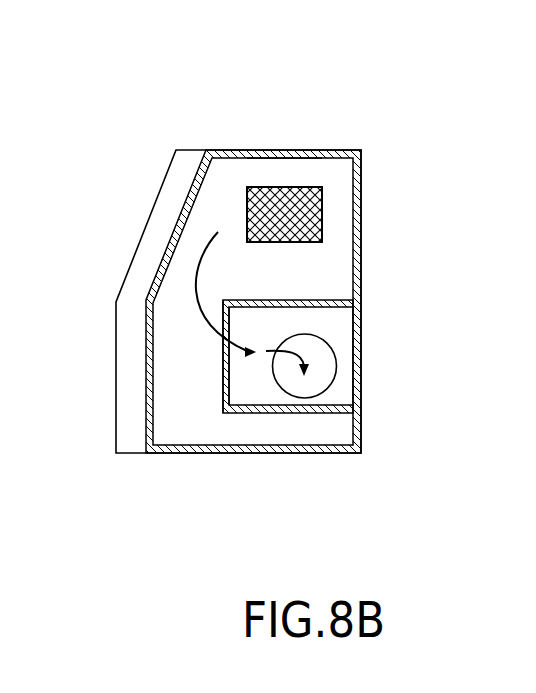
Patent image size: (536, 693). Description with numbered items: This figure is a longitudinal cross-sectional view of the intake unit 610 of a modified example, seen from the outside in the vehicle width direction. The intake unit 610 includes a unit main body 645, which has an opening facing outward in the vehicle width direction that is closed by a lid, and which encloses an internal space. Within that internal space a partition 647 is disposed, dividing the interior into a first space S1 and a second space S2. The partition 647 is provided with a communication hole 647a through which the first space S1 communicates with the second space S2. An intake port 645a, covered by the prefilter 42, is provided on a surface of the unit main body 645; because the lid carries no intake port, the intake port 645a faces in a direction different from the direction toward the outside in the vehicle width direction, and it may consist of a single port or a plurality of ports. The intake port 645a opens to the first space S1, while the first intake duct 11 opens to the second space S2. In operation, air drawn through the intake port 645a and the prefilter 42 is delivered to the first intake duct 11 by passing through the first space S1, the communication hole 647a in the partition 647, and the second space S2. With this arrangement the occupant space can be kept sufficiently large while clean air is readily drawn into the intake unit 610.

The intake unit 610 is at (119, 135).
The unit main body 645 is at (361, 203).
The intake port 645a is at (300, 187).
The prefilter 42 is at (259, 187).
The partition 647 is at (283, 413).
The communication hole 647a is at (222, 373).
The first space S1 is at (177, 352).
The second space S2 is at (333, 320).
The first intake duct 11 is at (336, 372).